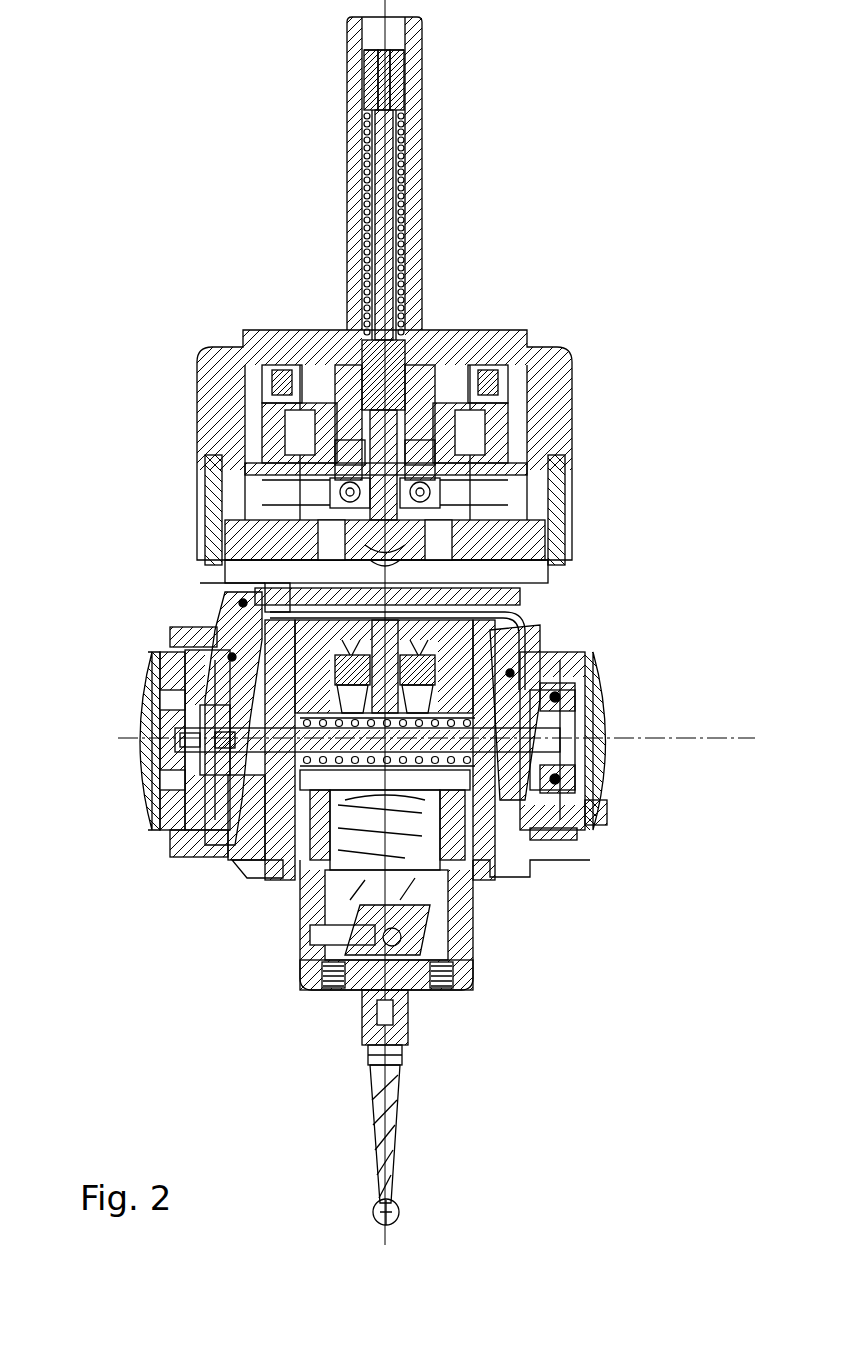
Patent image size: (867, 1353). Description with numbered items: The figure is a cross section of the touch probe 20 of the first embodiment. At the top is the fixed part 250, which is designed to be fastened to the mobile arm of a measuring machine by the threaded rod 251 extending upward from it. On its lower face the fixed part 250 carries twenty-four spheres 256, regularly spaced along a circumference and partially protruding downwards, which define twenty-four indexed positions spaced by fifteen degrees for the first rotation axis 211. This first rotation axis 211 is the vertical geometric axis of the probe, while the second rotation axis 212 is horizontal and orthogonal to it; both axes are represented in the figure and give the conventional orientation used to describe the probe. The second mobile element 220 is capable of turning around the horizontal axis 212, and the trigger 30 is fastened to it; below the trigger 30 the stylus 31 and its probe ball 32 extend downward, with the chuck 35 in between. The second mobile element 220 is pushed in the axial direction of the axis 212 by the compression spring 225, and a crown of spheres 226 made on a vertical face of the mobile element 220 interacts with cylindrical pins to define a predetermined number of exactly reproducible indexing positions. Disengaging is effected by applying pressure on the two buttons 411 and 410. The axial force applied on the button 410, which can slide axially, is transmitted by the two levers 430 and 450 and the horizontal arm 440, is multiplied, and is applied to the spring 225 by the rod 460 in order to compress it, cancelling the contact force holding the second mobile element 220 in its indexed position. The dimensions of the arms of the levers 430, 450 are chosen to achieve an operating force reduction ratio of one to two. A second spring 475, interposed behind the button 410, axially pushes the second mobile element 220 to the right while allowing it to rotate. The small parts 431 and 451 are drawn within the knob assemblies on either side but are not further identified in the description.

The touch probe 20 is at (165, 218).
The first rotation axis 211 is at (387, 35).
The threaded rod 251 is at (423, 207).
The fixed part 250 is at (550, 382).
The spheres 256 is at (540, 483).
The horizontal arm 440 is at (283, 592).
The lever 450 is at (548, 618).
The crown of spheres 226 is at (215, 648).
The second mobile element 220 is at (570, 646).
The second rotation axis 212 is at (127, 737).
The button 410 is at (148, 828).
The lever 430 is at (143, 673).
The clamp block 431 is at (170, 633).
The second spring 475 is at (202, 855).
The button 411 is at (612, 686).
The detent element 451 is at (597, 703).
The rod 460 is at (607, 818).
The compression spring 225 is at (572, 835).
The trigger 30 is at (460, 910).
The chuck 35 is at (472, 950).
The stylus 31 is at (395, 1142).
The probe ball 32 is at (399, 1212).